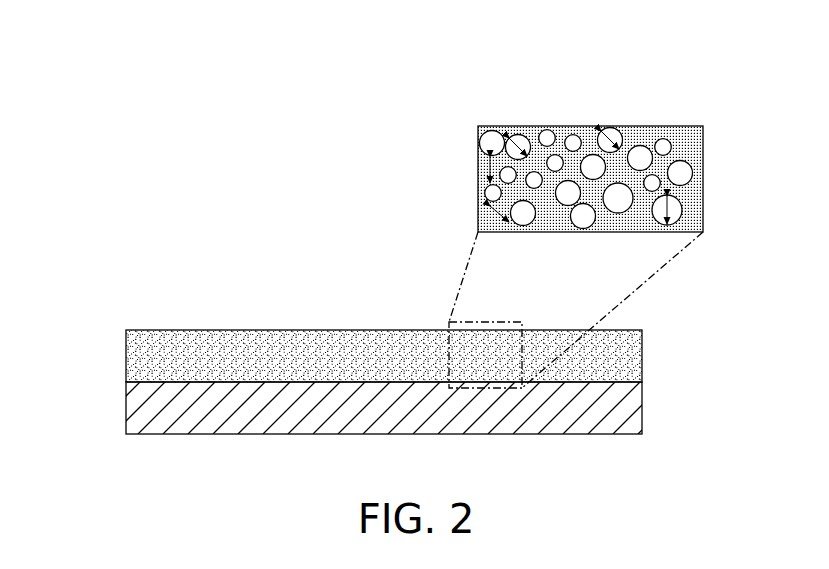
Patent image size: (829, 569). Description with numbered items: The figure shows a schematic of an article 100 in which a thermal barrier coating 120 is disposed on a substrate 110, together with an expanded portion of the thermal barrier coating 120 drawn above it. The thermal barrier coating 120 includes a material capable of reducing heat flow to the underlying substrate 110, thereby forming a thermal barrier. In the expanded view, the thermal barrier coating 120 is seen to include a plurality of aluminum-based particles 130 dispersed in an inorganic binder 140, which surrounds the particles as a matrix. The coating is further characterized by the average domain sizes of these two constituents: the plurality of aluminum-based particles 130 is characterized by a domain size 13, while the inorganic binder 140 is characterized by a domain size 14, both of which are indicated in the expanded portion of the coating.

The article 100 is at (168, 60).
The substrate 110 is at (644, 406).
The thermal barrier coating 120 is at (644, 348).
The aluminum-based particles 130 is at (617, 203).
The inorganic binder 140 is at (673, 193).
The domain size 13 is at (600, 133).
The domain size 14 is at (482, 213).